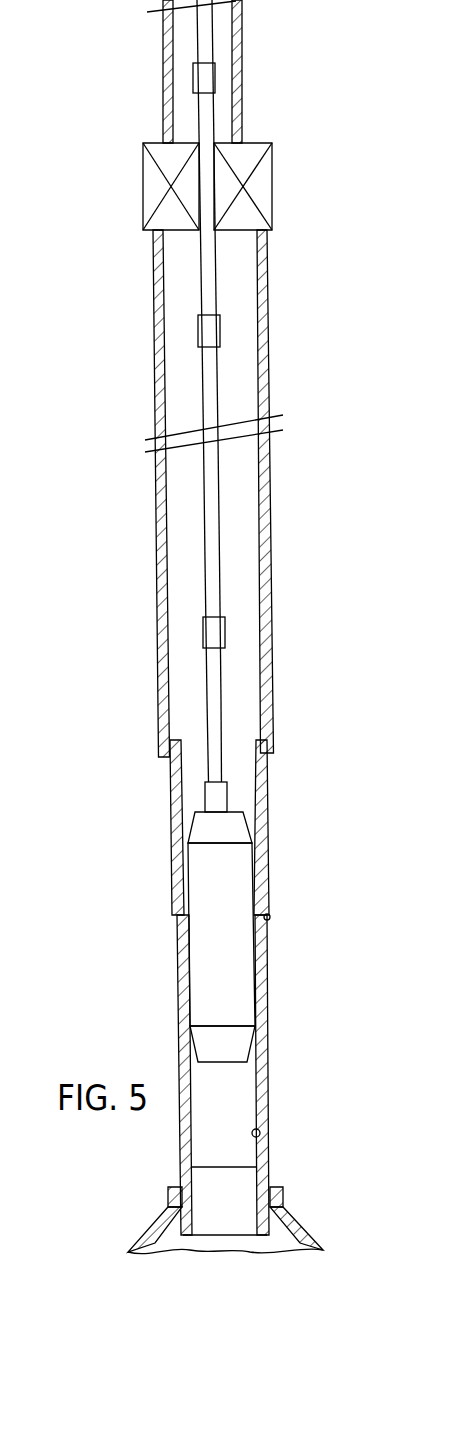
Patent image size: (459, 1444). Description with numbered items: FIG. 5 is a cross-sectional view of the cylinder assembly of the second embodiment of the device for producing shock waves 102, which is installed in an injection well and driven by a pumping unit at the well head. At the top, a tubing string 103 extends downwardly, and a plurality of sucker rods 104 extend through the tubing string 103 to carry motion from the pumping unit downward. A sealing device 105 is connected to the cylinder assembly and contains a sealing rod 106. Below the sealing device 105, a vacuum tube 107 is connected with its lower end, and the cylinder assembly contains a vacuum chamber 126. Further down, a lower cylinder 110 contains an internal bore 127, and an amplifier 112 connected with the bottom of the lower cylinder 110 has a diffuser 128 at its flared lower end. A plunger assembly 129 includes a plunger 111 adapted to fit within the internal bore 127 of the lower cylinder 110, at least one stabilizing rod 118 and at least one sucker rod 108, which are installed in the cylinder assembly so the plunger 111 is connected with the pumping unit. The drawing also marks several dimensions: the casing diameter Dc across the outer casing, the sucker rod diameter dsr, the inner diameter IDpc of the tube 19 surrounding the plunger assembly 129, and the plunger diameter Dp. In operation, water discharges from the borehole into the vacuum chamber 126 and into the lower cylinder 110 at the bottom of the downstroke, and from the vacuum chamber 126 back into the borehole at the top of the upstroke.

The production tubing 19 is at (172, 822).
The device for producing shock waves 102 is at (277, 218).
The tubing string 103 is at (163, 78).
The sucker rods 104 is at (203, 30).
The sealing device 105 is at (160, 185).
The sealing rod 106 is at (207, 280).
The vacuum tube 107 is at (262, 328).
The sucker rod 108 is at (208, 405).
The lower cylinder 110 is at (260, 1098).
The plunger 111 is at (215, 988).
The amplifier 112 is at (170, 1190).
The stabilizing rod 118 is at (225, 678).
The vacuum chamber 126 is at (232, 518).
The internal bore 127 is at (267, 1142).
The diffuser 128 is at (275, 1237).
The plunger assembly 129 is at (238, 830).
The casing inner diameter Dc is at (166, 457).
The sucker rod diameter dsr is at (185, 562).
The pump chamber inner diameter IDpc is at (181, 763).
The plunger diameter Dp is at (190, 943).